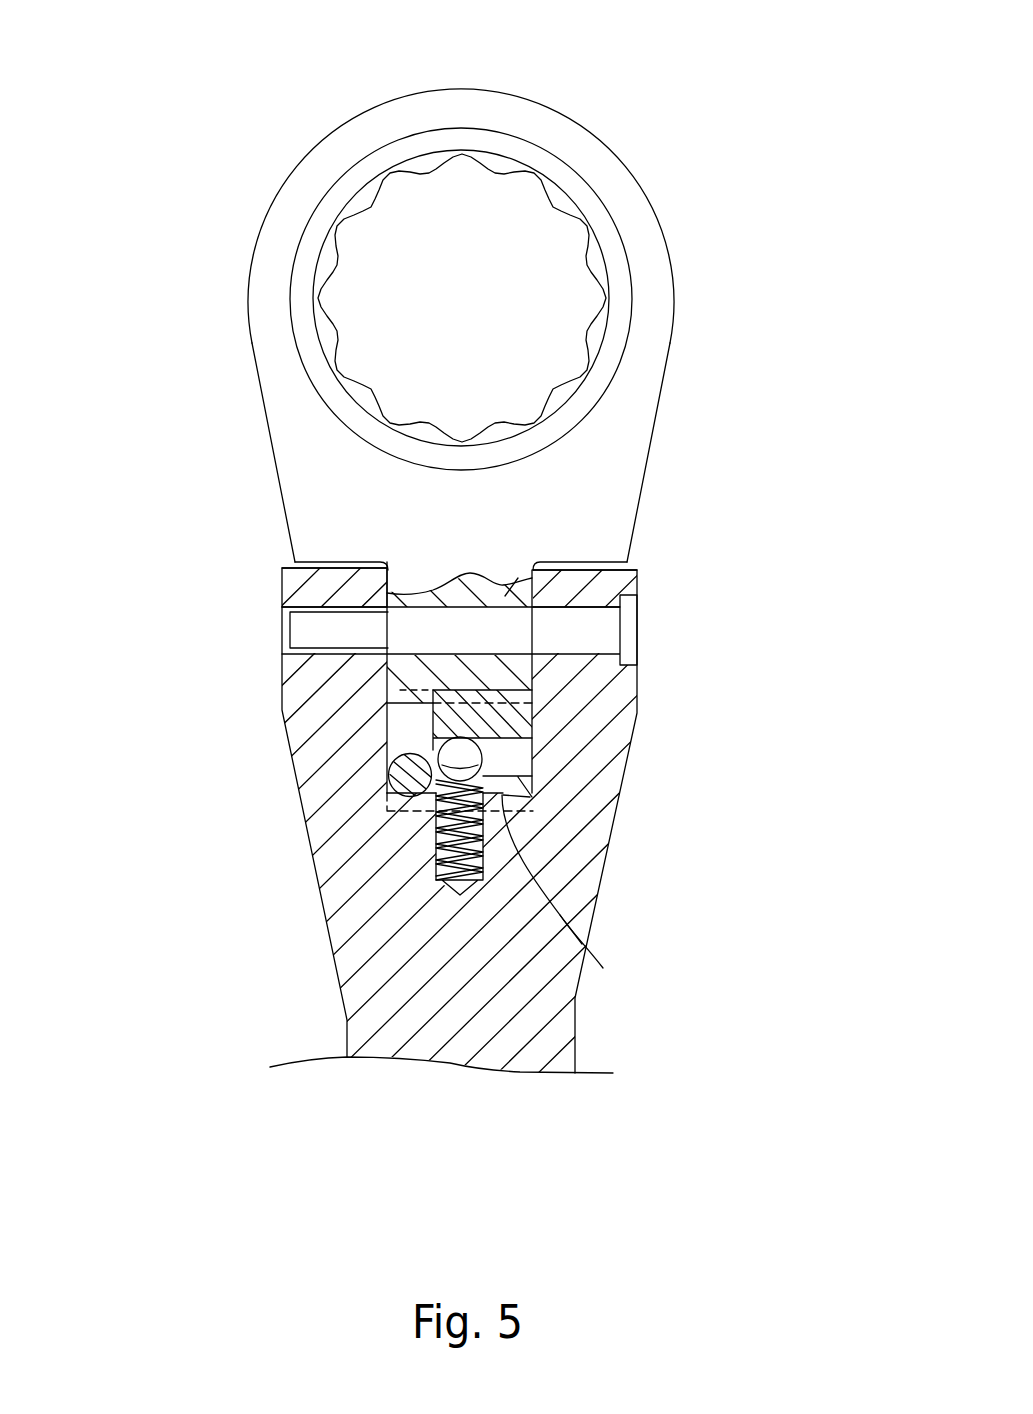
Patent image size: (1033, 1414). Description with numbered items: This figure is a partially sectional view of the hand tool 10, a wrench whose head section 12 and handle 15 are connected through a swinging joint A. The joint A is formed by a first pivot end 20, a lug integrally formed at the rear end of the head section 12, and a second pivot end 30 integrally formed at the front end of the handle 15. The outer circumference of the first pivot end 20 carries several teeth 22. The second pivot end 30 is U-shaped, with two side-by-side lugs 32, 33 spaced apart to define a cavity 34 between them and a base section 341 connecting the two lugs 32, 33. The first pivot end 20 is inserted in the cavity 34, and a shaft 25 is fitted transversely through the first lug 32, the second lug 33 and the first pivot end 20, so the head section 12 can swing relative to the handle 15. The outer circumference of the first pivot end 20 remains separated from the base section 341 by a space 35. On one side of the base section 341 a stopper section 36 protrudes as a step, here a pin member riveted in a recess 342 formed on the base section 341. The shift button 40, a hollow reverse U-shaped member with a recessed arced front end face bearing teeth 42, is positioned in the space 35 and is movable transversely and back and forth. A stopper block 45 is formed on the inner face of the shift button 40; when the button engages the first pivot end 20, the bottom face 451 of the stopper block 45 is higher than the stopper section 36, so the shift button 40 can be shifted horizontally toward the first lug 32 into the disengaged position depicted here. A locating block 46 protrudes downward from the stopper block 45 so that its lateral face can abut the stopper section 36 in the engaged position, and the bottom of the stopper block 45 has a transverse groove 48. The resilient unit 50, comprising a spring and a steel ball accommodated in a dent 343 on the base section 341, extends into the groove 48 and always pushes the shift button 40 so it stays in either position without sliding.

The hand tool 10 is at (139, 86).
The head section 12 is at (620, 188).
The handle 15 is at (482, 1052).
The first pivot end 20 is at (402, 667).
The teeth 22 is at (422, 688).
The shaft 25 is at (630, 608).
The second pivot end 30 is at (660, 551).
The first lug 32 is at (613, 686).
The second lug 33 is at (293, 692).
The cavity 34 is at (518, 578).
The base section 341 is at (583, 913).
The recess 342 is at (437, 857).
The dent 343 is at (570, 947).
The space 35 is at (409, 727).
The stopper section 36 is at (390, 778).
The shift button 40 is at (520, 723).
The teeth 42 is at (488, 690).
The stopper block 45 is at (388, 776).
The bottom face 451 is at (483, 738).
The locating block 46 is at (530, 797).
The transverse groove 48 is at (492, 766).
The resilient unit 50 is at (447, 852).
The swinging joint A is at (196, 559).